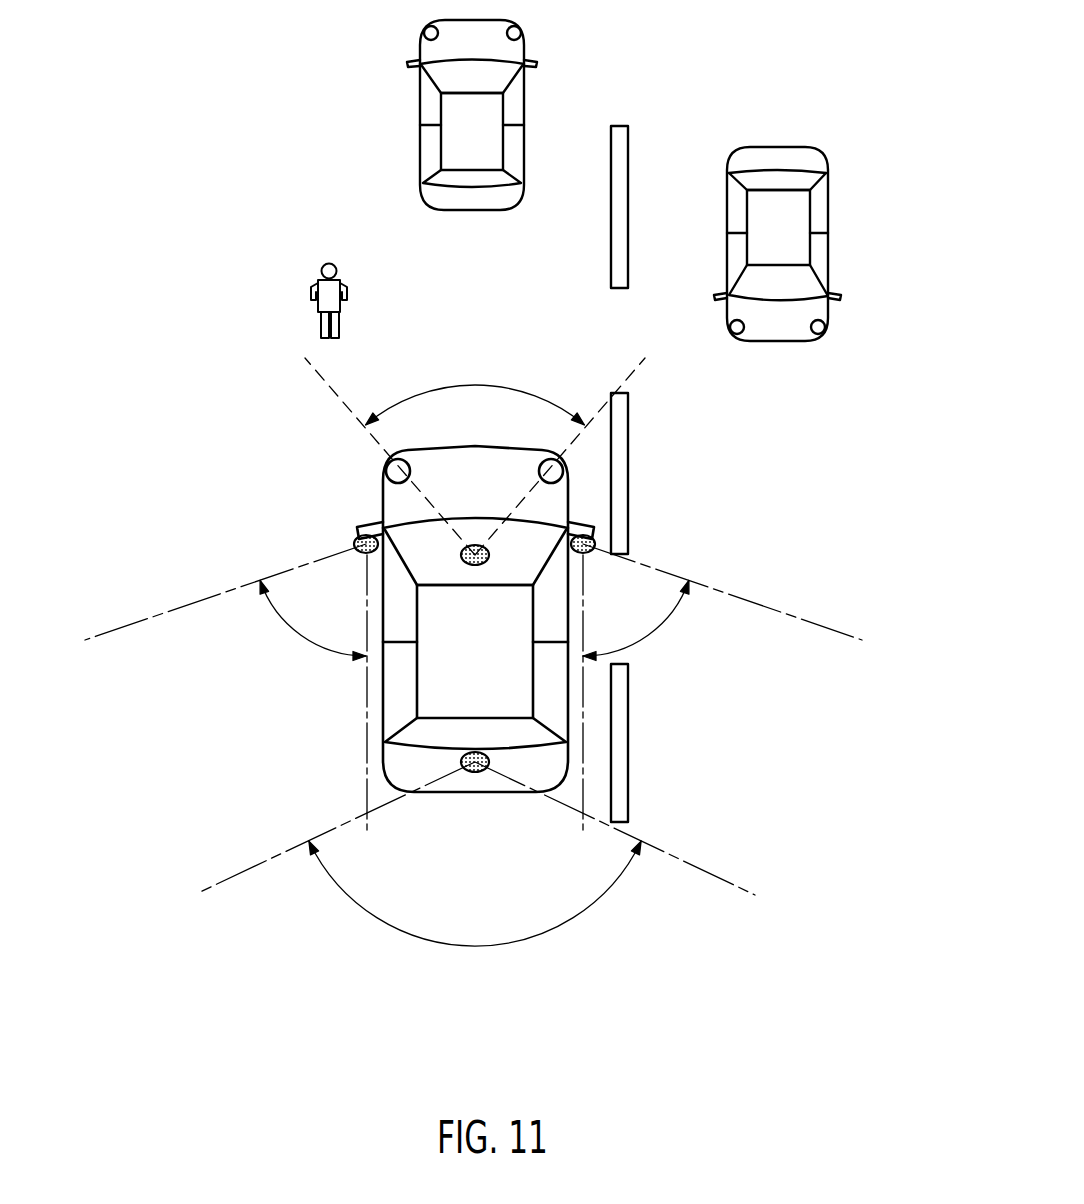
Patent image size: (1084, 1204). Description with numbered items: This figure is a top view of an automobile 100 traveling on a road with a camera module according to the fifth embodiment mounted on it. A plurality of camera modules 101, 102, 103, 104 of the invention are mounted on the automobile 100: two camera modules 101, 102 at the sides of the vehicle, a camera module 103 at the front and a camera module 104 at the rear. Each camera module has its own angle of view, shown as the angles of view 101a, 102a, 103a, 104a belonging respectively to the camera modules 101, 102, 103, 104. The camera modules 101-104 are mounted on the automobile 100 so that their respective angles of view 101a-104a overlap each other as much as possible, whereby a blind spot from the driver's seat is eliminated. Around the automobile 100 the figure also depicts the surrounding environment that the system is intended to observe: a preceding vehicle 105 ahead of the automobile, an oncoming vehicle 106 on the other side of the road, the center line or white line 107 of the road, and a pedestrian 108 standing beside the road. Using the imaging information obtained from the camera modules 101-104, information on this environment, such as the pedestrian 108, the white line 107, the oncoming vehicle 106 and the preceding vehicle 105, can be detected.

The automobile 100 is at (452, 673).
The camera module 101 is at (355, 534).
The camera module 102 is at (595, 538).
The camera module 103 is at (490, 556).
The camera module 104 is at (476, 774).
The angle of view 101a is at (303, 640).
The angle of view 102a is at (647, 640).
The angle of view 103a is at (464, 382).
The angle of view 104a is at (476, 946).
The preceding vehicle 105 is at (455, 117).
The oncoming vehicle 106 is at (793, 218).
The center line (white line) of the road 107 is at (620, 165).
The pedestrian 108 is at (323, 266).